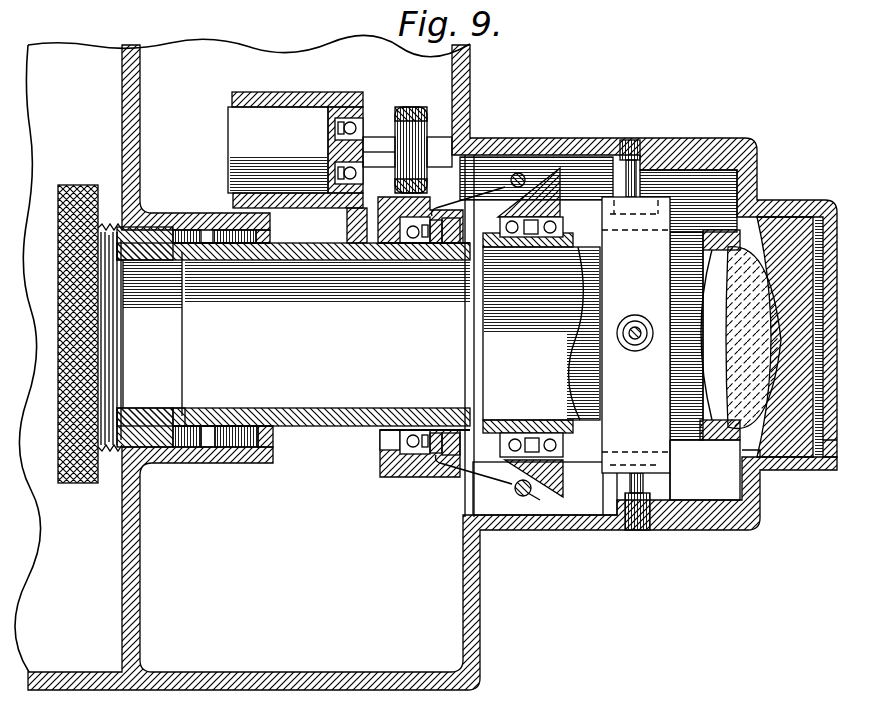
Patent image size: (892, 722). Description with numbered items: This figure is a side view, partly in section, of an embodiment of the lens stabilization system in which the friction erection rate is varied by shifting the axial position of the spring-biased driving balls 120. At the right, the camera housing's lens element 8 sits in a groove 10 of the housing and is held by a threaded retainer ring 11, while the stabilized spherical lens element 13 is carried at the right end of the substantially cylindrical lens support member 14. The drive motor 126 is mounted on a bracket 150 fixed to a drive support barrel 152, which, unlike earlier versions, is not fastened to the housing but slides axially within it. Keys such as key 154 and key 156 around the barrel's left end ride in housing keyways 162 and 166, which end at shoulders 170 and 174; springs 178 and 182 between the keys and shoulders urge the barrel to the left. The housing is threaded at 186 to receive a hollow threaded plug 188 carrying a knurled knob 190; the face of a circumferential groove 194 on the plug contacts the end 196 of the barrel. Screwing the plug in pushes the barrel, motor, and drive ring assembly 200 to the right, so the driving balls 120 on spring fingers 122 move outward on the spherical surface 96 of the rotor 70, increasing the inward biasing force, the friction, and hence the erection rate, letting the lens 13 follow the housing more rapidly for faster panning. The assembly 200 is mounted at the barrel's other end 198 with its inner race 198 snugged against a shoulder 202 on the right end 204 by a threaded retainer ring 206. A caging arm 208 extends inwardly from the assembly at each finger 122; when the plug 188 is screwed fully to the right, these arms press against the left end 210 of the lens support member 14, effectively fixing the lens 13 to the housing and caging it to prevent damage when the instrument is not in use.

The lens element 8 is at (793, 227).
The groove 10 is at (225, 502).
The retainer ring 11 is at (823, 463).
The spherical lens element 13 is at (748, 358).
The lens support member 14 is at (722, 232).
The rotor 70 is at (566, 172).
The spherical surface 96 is at (547, 170).
The driving balls 120 is at (518, 172).
The spring fingers 122 is at (494, 202).
The drive motor 126 is at (272, 120).
The bracket 150 is at (338, 108).
The drive support barrel 152 is at (332, 230).
The key 154 is at (220, 230).
The key 156 is at (215, 448).
The keyway 162 is at (196, 230).
The keyway 166 is at (206, 447).
The shoulder 170 is at (270, 226).
The shoulder 174 is at (273, 454).
The spring 178 is at (266, 240).
The spring 182 is at (275, 437).
The threaded portion of camera housing 186 is at (140, 236).
The hollow threaded plug 188 is at (144, 434).
The knurled knob 190 is at (83, 483).
The groove 194 is at (168, 440).
The end of drive support barrel 196 is at (185, 413).
The inner race 198 is at (412, 252).
The drive ring assembly 200 is at (418, 213).
The shoulder 202 is at (388, 249).
The right end of drive support barrel 204 is at (470, 432).
The threaded retainer ring 206 is at (436, 250).
The caging arm 208 is at (450, 250).
The left end of lens support member 210 is at (481, 245).